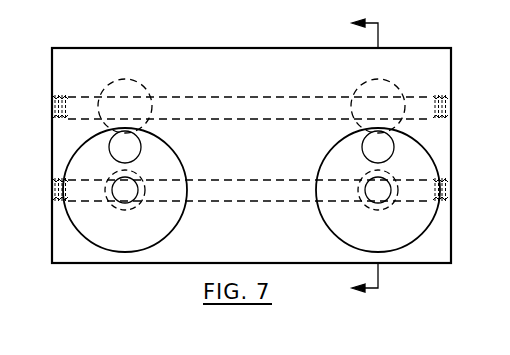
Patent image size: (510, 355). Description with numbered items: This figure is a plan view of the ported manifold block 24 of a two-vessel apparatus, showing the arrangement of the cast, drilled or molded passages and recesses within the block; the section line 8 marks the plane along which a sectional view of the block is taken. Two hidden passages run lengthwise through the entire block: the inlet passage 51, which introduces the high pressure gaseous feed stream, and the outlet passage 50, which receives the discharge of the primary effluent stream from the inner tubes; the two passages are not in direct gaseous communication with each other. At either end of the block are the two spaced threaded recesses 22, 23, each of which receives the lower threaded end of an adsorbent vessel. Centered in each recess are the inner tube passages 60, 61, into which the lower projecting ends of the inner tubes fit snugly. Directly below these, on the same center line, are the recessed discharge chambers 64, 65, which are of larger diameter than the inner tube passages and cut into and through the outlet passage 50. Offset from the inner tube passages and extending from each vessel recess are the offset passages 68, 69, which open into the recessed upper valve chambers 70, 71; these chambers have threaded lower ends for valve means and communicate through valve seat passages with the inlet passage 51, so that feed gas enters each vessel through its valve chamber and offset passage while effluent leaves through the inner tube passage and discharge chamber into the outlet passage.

The section line 8- 8 is at (357, 158).
The threaded recess 22 is at (409, 247).
The threaded recess 23 is at (89, 242).
The manifold block 24 is at (247, 48).
The outlet passage 50 is at (265, 180).
The inlet passage 51 is at (288, 97).
The inner tube passage 60 is at (383, 201).
The inner tube passage 61 is at (130, 201).
The recessed discharge chamber 64 is at (398, 190).
The recessed discharge chamber 65 is at (105, 190).
The offset passage 68 is at (390, 148).
The offset passage 69 is at (137, 148).
The recessed upper valve chamber 70 is at (393, 80).
The recessed upper valve chamber 71 is at (137, 80).